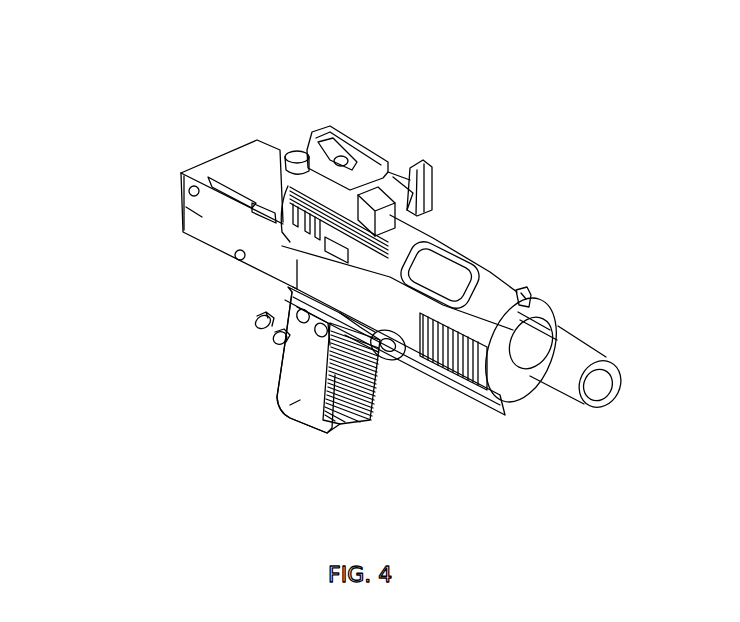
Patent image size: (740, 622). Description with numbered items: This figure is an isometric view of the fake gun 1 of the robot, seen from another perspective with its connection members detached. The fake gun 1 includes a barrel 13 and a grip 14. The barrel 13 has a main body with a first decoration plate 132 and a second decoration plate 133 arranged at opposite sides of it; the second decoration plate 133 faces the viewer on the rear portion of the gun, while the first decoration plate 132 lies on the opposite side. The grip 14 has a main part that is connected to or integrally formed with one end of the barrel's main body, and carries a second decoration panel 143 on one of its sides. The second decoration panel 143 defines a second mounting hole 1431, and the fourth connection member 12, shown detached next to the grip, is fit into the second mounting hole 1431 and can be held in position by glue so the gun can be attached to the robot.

The fake gun 1 is at (457, 132).
The fourth connection member 12 is at (275, 339).
The barrel 13 is at (452, 232).
The first decoration plate 132 is at (525, 295).
The second decoration plate 133 is at (185, 195).
The grip 14 is at (352, 428).
The second decoration panel 143 is at (280, 400).
The second mounting hole 1431 is at (316, 327).